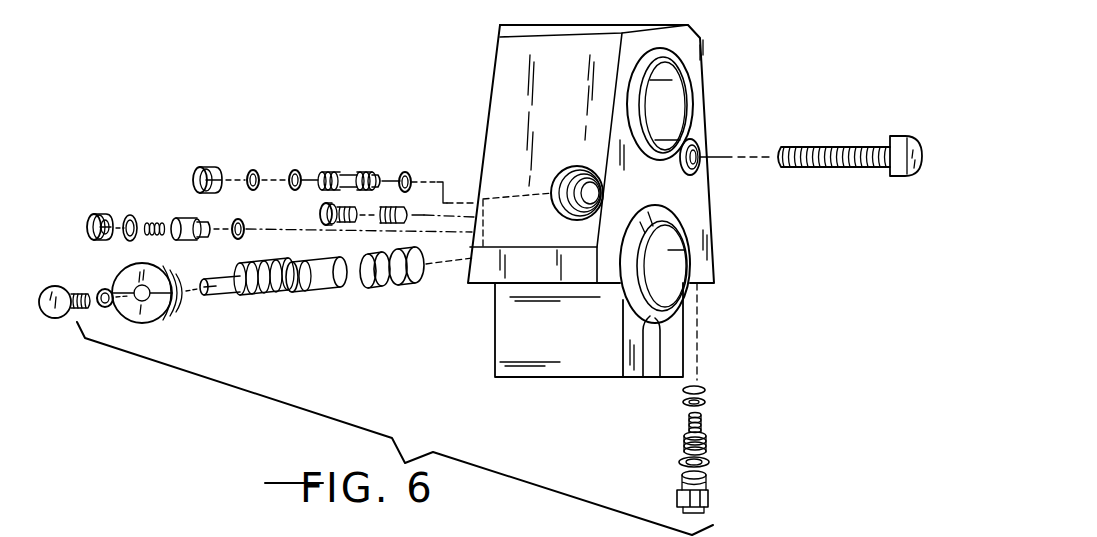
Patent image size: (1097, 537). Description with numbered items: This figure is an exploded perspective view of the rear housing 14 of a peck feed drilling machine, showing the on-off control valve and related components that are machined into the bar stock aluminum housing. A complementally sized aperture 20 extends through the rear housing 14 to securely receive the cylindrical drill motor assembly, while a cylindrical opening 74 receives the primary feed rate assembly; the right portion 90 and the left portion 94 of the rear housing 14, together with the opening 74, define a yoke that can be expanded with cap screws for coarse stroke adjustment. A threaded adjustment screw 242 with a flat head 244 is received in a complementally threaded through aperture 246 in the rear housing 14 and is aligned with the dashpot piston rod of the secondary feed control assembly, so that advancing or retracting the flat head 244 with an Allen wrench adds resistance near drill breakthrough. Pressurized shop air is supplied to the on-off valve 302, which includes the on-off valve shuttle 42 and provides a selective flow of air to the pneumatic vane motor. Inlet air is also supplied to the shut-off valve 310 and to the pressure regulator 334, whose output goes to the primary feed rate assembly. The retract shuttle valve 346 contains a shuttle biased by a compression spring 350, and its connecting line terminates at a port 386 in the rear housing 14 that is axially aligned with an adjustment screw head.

The rear housing 14 is at (522, 103).
The aperture 20 is at (652, 92).
The on-off valve shuttle 42 is at (300, 286).
The cylindrical opening 74 is at (663, 266).
The right portion 90 is at (575, 350).
The left portion 94 is at (673, 343).
The threaded adjustment screw 242 is at (805, 146).
The flat head 244 is at (905, 136).
The threaded through aperture 246 is at (710, 160).
The on-off valve 302 is at (226, 297).
The shut-off valve 310 is at (347, 172).
The pressure regulator 334 is at (703, 436).
The retract shuttle valve 346 is at (178, 218).
The compression spring 350 is at (155, 236).
The port 386 is at (623, 188).